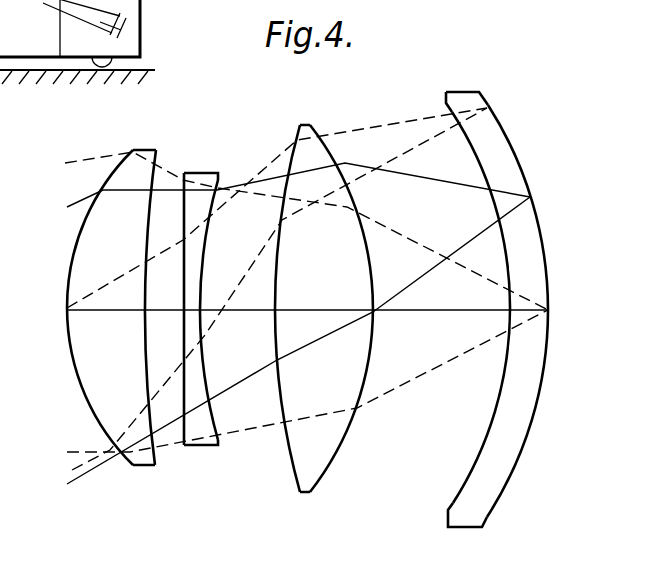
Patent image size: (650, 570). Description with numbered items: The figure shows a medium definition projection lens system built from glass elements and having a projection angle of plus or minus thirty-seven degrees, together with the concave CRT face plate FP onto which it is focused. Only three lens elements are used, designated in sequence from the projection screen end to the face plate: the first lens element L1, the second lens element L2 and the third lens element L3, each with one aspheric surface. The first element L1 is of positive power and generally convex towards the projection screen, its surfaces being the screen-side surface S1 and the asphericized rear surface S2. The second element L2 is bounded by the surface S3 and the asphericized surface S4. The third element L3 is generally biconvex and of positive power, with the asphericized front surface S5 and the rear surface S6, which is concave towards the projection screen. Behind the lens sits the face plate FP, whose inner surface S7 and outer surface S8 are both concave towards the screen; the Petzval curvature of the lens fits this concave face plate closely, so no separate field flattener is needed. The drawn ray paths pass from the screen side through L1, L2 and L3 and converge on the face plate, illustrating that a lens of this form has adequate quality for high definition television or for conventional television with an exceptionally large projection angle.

The first lens element L1 is at (103, 307).
The second lens element L2 is at (197, 309).
The third lens element L3 is at (329, 308).
The first surface of lens element L1 S1 is at (85, 394).
The second surface of lens element L1 S2 is at (146, 345).
The third surface (first surface of L2) S3 is at (185, 288).
The fourth surface (second surface of L2) S4 is at (204, 361).
The fifth surface (first surface of L3) S5 is at (277, 333).
The sixth surface (second surface of L3) S6 is at (376, 340).
The seventh surface (first surface of face plate) S7 is at (481, 451).
The eighth surface (second surface of face plate) S8 is at (524, 444).
The CRT face plate FP is at (511, 309).